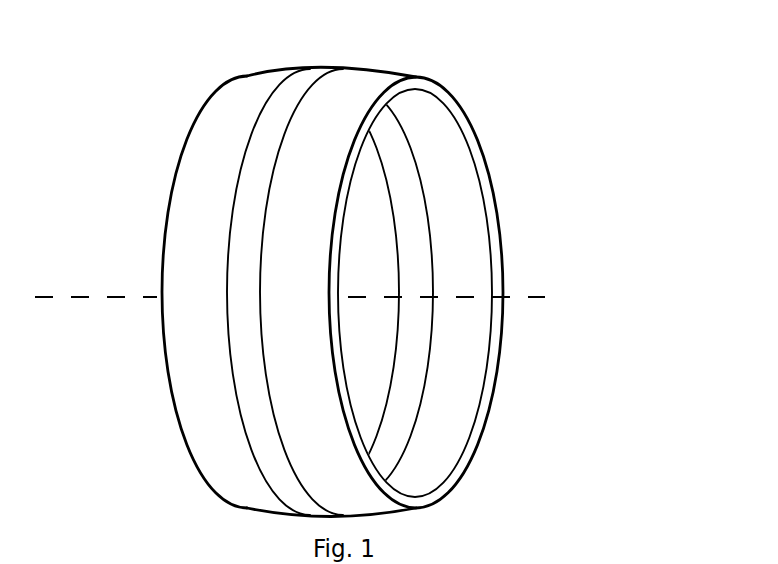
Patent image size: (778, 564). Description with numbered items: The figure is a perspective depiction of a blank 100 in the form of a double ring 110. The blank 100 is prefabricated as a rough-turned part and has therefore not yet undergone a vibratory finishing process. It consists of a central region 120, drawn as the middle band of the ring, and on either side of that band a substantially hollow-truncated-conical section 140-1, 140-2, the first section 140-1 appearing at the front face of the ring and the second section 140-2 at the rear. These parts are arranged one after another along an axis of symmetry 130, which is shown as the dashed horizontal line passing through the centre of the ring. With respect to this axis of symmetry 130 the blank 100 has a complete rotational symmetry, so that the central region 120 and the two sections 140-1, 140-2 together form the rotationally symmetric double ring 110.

The blank 100 is at (379, 259).
The double ring 110 is at (328, 259).
The central region 120 is at (300, 78).
The axis of symmetry 130 is at (530, 297).
The hollow-truncated-conical section 140-1 is at (470, 218).
The hollow-truncated-conical section 140-2 is at (181, 210).